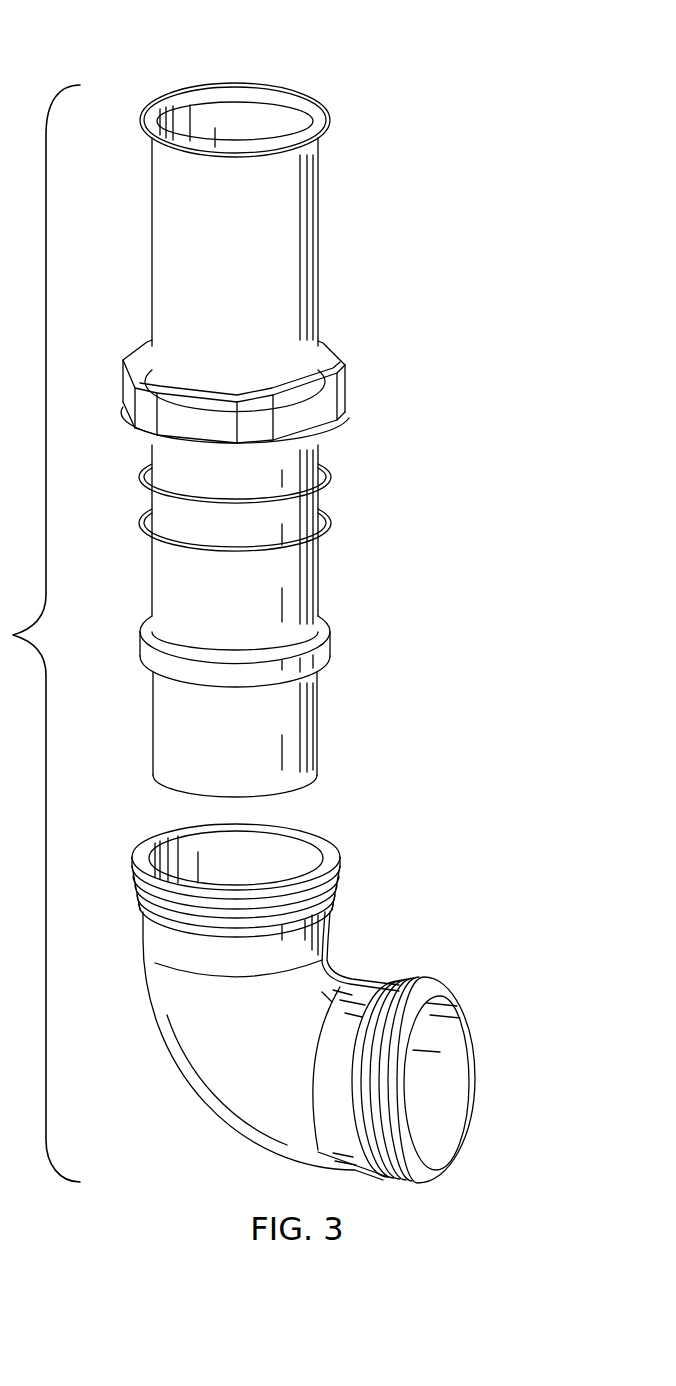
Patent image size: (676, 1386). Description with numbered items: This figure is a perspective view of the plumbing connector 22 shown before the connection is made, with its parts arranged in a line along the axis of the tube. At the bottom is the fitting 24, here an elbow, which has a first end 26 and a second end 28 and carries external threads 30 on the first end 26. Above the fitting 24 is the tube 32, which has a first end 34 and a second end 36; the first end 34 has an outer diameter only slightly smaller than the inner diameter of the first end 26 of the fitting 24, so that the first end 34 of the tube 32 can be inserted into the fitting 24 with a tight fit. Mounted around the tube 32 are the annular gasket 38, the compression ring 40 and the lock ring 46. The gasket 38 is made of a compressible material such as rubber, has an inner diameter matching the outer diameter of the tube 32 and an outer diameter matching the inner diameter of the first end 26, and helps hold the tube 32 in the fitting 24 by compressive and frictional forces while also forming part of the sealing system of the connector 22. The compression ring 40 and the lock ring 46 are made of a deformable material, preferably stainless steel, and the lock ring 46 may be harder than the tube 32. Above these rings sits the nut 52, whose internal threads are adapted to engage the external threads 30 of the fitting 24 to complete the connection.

The plumbing connector 22 is at (538, 426).
The fitting 24 is at (338, 980).
The first end of the fitting 26 is at (148, 848).
The second end of the fitting 28 is at (474, 1068).
The external threads 30 is at (338, 878).
The tube 32 is at (322, 226).
The first end of the tube 34 is at (308, 782).
The second end of the tube 36 is at (299, 103).
The annular gasket 38 is at (332, 643).
The compression ring 40 is at (328, 523).
The lock ring 46 is at (333, 470).
The nut 52 is at (350, 392).